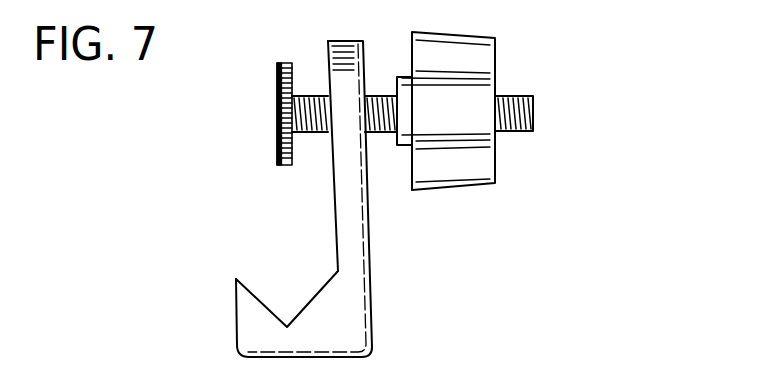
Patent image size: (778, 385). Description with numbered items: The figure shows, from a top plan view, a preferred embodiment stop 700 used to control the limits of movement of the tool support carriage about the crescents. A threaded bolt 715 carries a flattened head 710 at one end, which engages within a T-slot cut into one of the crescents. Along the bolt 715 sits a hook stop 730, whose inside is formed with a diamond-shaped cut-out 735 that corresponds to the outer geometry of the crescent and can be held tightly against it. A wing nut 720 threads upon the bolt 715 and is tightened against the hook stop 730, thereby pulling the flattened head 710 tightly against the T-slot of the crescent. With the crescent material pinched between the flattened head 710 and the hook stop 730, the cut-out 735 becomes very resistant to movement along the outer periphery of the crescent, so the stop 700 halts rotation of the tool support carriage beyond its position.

The stop 700 is at (553, 45).
The flattened head 710 is at (283, 122).
The threaded bolt 715 is at (522, 120).
The wing nut 720 is at (462, 167).
The hook stop 730 is at (245, 322).
The diamond-shaped cut-out 735 is at (304, 306).